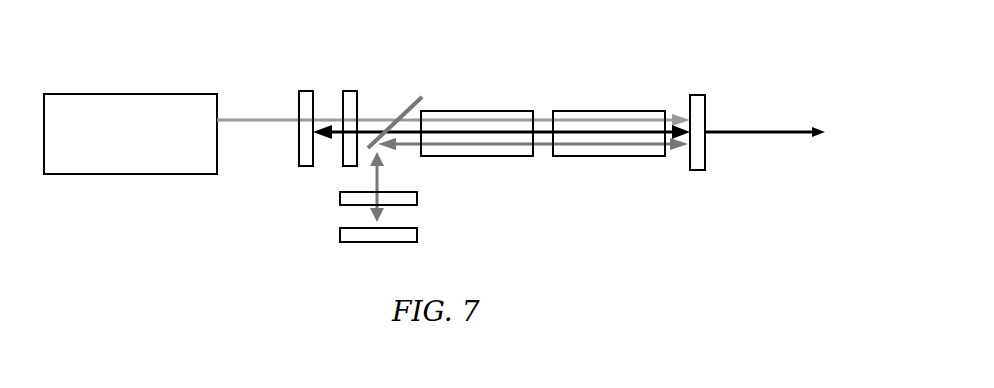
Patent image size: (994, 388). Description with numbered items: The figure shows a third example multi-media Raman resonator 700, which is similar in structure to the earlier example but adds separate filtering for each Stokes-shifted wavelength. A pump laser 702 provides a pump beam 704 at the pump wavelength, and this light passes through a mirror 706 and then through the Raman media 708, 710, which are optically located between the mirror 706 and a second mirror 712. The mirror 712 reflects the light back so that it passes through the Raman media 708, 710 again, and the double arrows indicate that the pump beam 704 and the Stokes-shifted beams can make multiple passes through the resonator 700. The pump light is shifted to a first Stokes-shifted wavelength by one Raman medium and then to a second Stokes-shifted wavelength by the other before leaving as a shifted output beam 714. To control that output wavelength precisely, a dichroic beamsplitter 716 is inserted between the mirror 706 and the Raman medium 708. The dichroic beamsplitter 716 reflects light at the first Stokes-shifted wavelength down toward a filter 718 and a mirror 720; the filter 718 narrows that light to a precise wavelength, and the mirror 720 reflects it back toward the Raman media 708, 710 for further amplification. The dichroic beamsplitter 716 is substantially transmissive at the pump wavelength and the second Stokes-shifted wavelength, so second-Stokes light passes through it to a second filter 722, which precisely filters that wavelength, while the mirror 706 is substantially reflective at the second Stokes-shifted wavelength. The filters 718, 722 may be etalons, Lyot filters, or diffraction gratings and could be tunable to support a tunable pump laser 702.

The multi-media Raman resonator 700 is at (140, 30).
The pump laser 702 is at (148, 175).
The pump beam 704 is at (275, 123).
The mirror 706 is at (307, 91).
The second filter 722 is at (347, 91).
The dichroic beamsplitter 716 is at (422, 95).
The Raman medium 708 is at (507, 111).
The Raman medium 710 is at (622, 111).
The mirror 712 is at (700, 95).
The shifted output beam 714 is at (772, 137).
The filter 718 is at (340, 198).
The mirror 720 is at (417, 233).